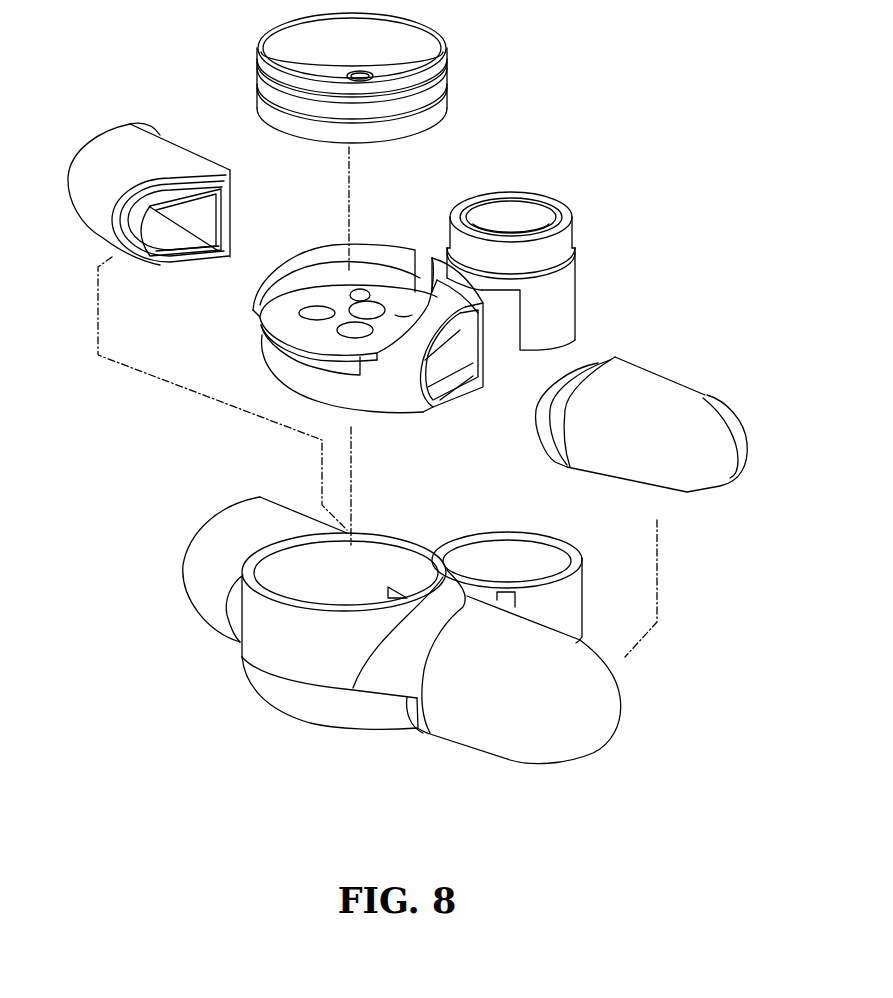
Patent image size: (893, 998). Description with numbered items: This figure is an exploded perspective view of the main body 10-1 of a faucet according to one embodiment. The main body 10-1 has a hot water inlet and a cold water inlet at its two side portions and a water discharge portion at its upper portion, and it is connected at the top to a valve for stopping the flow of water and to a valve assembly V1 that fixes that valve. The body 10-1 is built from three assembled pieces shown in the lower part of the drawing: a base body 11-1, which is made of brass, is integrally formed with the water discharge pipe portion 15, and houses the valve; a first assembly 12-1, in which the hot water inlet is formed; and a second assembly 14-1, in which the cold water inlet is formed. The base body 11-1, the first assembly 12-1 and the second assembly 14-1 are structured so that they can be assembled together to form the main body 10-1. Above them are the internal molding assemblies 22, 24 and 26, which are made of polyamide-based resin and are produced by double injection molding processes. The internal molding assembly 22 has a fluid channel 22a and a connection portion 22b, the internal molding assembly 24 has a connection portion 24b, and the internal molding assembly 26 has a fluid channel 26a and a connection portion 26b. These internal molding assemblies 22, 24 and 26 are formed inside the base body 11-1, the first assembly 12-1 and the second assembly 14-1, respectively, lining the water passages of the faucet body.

The main body 10-1 is at (78, 30).
The valve assembly V1 is at (444, 78).
The internal molding assembly 26 is at (160, 218).
The fluid channel 26a is at (170, 237).
The connection portion 26b is at (143, 247).
The internal molding assembly 22 is at (414, 311).
The fluid channel 22a is at (367, 310).
The connection portion 22b is at (450, 396).
The internal molding assembly 24 is at (630, 407).
The connection portion 24b is at (543, 442).
The base body 11-1 is at (328, 673).
The first assembly 12-1 is at (500, 718).
The second assembly 14-1 is at (203, 593).
The water discharge pipe portion 15 is at (527, 562).